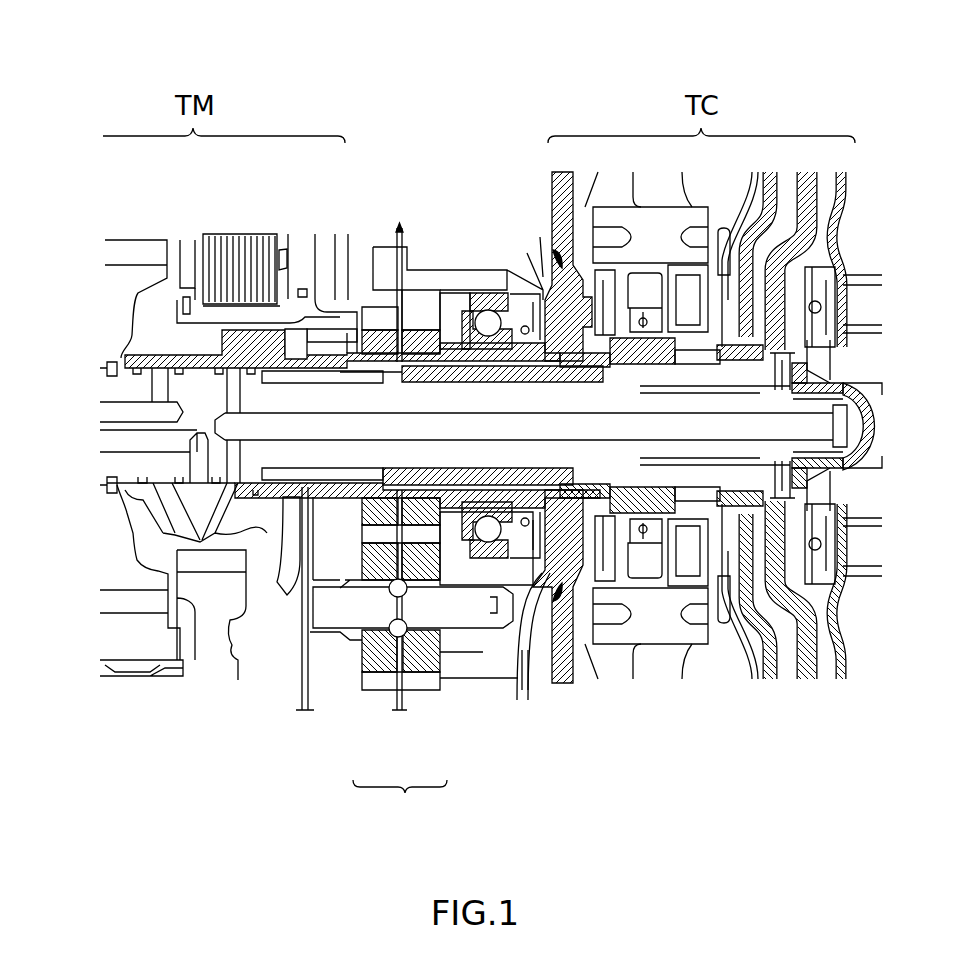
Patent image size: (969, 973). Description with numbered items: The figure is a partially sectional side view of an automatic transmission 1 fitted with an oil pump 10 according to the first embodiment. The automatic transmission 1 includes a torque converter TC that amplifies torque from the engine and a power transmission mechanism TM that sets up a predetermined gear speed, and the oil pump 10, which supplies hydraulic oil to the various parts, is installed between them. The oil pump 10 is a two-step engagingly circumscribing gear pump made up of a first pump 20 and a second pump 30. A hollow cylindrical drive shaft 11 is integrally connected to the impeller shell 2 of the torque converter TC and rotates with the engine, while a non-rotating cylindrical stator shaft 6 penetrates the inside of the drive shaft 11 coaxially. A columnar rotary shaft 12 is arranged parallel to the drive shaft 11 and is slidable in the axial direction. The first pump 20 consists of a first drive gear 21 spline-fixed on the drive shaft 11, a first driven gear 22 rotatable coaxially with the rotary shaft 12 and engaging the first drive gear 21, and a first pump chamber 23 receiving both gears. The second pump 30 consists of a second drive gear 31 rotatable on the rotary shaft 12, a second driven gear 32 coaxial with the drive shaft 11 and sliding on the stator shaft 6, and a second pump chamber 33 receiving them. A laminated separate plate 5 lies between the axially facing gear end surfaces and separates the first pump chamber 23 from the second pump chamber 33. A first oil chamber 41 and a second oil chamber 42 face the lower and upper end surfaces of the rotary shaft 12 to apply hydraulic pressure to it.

The automatic transmission 1 is at (475, 110).
The impeller shell 2 is at (552, 195).
The laminated separate plate 5 is at (403, 230).
The stator shaft 6 is at (289, 361).
The oil pump 10 is at (400, 797).
The drive shaft 11 is at (488, 336).
The rotary shaft 12 is at (300, 612).
The first pump 20 is at (424, 705).
The first drive gear 21 is at (447, 320).
The first driven gear 22 is at (441, 658).
The first pump chamber 23 is at (420, 297).
The second pump 30 is at (375, 705).
The second drive gear 31 is at (363, 657).
The second driven gear 32 is at (357, 322).
The second pump chamber 33 is at (388, 298).
The first oil chamber 41 is at (518, 633).
The second oil chamber 42 is at (306, 650).